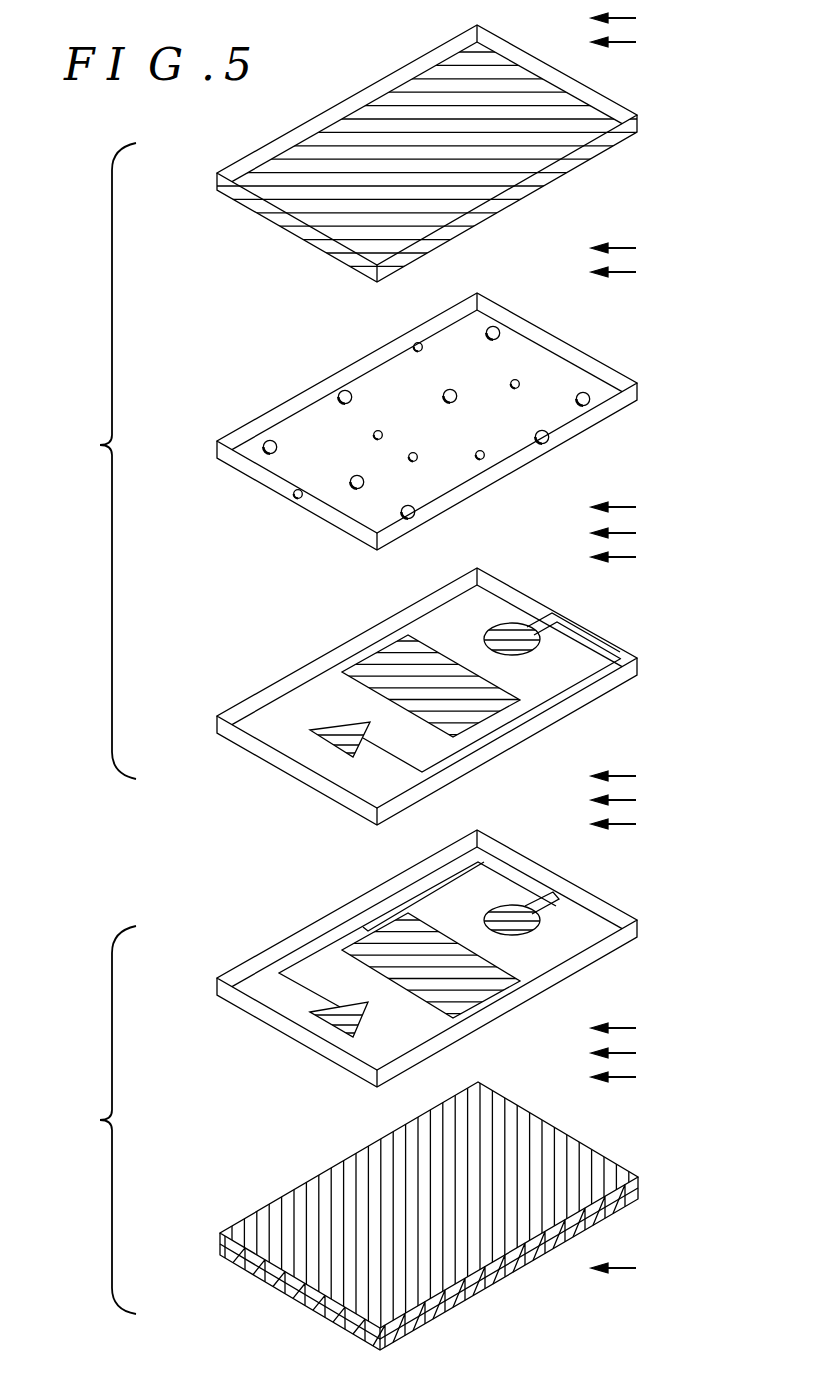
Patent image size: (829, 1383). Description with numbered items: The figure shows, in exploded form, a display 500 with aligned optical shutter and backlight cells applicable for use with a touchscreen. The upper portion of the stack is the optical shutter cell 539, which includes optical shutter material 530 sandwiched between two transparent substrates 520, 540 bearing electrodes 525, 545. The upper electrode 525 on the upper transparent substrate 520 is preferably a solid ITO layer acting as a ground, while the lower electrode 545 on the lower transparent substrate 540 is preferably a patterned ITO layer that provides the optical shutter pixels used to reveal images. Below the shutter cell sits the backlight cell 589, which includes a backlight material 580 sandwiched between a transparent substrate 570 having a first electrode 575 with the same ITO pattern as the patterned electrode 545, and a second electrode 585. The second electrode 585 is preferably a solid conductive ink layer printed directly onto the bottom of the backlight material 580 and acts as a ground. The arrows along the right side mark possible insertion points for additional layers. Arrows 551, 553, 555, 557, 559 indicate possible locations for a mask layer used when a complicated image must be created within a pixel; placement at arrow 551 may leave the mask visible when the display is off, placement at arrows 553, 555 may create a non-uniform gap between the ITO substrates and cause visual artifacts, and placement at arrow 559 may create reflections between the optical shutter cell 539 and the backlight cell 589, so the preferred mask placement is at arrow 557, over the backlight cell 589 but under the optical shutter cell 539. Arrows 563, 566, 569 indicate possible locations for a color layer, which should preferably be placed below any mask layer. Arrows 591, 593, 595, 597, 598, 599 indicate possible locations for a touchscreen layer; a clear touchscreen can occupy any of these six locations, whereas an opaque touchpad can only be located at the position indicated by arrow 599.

The display 500 is at (752, 1317).
The transparent substrate 520 is at (553, 80).
The upper electrode 525 is at (596, 153).
The optical shutter material 530 is at (560, 352).
The optical shutter cell 539 is at (92, 461).
The transparent substrate 540 is at (601, 697).
The lower electrode 545 is at (512, 624).
The arrow 551 is at (640, 18).
The arrow 553 is at (640, 248).
The arrow 555 is at (640, 507).
The arrow 557 is at (641, 776).
The arrow 559 is at (640, 1028).
The arrow 563 is at (640, 533).
The arrow 566 is at (640, 800).
The arrow 569 is at (640, 1053).
The transparent substrate 570 is at (587, 902).
The first electrode 575 is at (488, 995).
The backlight material 580 is at (570, 1148).
The second electrode 585 is at (593, 1220).
The backlight cell 589 is at (92, 1120).
The arrow 591 is at (640, 42).
The arrow 593 is at (640, 272).
The arrow 595 is at (640, 557).
The arrow 597 is at (641, 824).
The arrow 598 is at (640, 1077).
The arrow 599 is at (640, 1268).